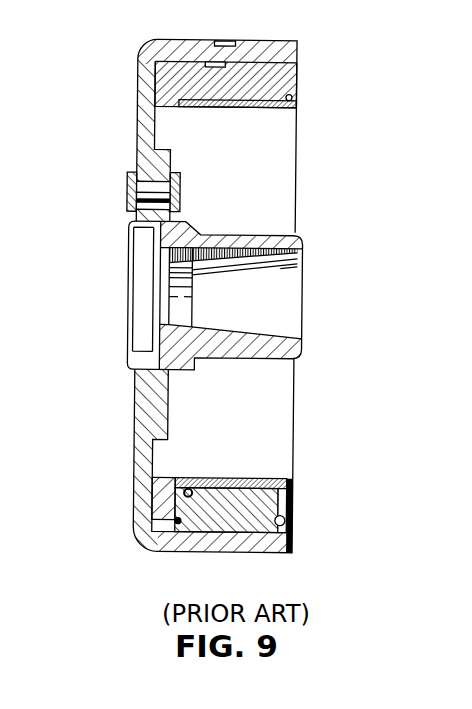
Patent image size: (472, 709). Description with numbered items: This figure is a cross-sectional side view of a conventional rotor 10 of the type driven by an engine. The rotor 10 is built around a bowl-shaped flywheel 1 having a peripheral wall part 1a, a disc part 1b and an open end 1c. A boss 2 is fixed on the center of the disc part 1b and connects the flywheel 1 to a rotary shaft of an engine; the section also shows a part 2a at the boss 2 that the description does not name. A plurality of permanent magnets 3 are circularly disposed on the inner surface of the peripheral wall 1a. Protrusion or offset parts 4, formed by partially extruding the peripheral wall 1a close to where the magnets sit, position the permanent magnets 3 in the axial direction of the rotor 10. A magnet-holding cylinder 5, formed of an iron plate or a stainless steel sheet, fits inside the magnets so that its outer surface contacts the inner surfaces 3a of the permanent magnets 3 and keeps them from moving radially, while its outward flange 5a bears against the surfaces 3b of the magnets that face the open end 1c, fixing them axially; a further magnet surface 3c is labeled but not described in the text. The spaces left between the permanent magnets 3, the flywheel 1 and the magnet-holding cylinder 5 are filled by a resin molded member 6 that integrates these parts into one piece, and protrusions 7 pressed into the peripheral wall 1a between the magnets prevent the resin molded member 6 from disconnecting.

The rotor 10 is at (300, 31).
The flywheel 1 is at (224, 282).
The peripheral wall part 1a is at (293, 48).
The disc part 1b is at (146, 118).
The open end 1c is at (294, 380).
The boss 2 is at (289, 239).
The nut 2a is at (146, 193).
The permanent magnets 3 is at (225, 512).
The inner surfaces 3a is at (190, 489).
The surfaces facing the open end 3b is at (289, 535).
The retaining element 3c is at (183, 523).
The protrusion parts 4 is at (170, 516).
The magnet-holding cylinder 5 is at (239, 107).
The outward flange 5a is at (289, 102).
The resin molded member 6 is at (292, 85).
The protrusions 7 is at (212, 67).